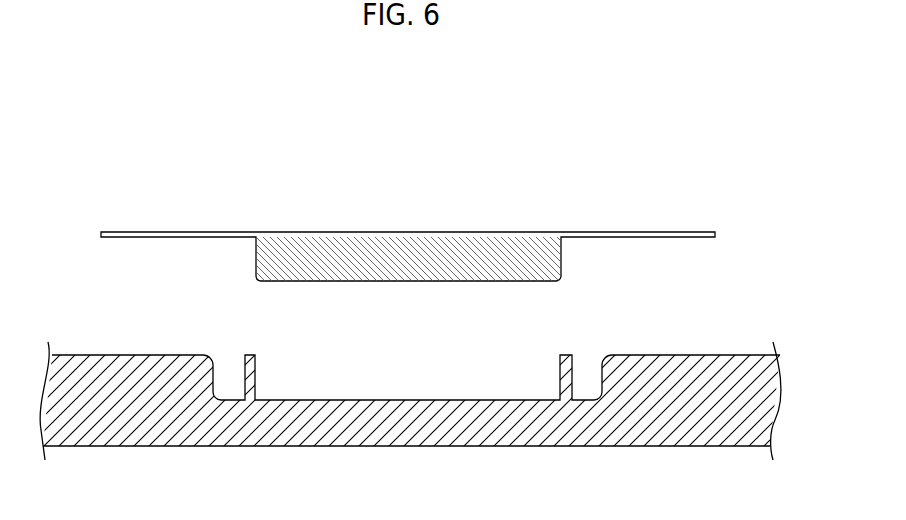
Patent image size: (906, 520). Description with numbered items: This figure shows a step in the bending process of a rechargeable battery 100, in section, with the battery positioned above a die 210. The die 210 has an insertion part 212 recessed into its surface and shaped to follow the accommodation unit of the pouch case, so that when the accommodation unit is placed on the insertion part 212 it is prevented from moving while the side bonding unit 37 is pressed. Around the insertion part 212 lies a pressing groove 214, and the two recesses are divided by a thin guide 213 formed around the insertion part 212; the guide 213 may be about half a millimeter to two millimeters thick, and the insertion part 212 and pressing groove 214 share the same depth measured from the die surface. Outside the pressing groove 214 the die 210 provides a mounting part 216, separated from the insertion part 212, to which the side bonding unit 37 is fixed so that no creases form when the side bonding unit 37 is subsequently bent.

The electronic device / sensor module 100 is at (431, 193).
The side bonding unit 37 is at (663, 232).
The die 210 is at (409, 447).
The insertion part 212 is at (406, 371).
The guide 213 is at (248, 355).
The pressing groove 214 is at (578, 371).
The mounting part 216 is at (128, 355).